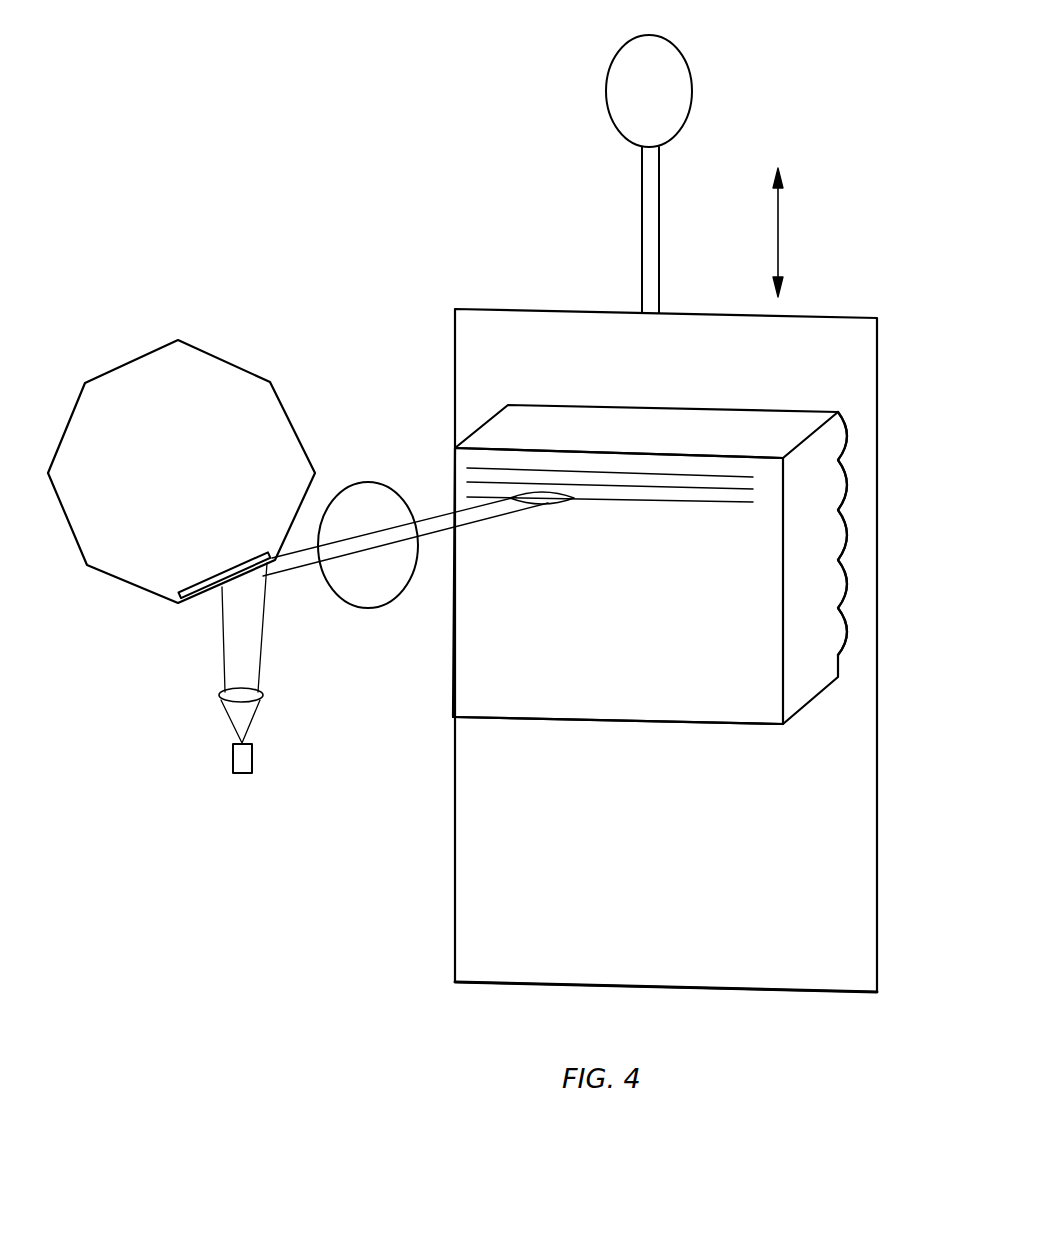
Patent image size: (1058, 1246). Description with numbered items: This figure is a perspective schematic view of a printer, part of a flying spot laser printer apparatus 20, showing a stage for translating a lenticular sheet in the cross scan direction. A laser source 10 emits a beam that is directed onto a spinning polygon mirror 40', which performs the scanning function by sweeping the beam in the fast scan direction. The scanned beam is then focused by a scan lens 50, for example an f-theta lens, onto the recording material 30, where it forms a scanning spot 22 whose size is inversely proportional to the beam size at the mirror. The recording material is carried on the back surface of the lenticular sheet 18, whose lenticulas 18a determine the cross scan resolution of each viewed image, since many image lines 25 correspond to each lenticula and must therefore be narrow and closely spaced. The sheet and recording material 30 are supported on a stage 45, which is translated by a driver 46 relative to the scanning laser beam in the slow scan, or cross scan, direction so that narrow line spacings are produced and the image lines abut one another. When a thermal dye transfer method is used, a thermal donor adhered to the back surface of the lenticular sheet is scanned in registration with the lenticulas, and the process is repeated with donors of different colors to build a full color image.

The laser source 10 is at (233, 760).
The lenticular sheet 18 is at (545, 425).
The lenticulas 18a is at (845, 438).
The flying spot laser printer apparatus 20 is at (560, 163).
The spot 22 is at (547, 502).
The image lines 25 is at (693, 473).
The recording material 30 is at (595, 708).
The spinning polygon mirror 40' is at (215, 564).
The stage 45 is at (840, 317).
The driver 46 is at (682, 82).
The scan lens 50 is at (373, 498).